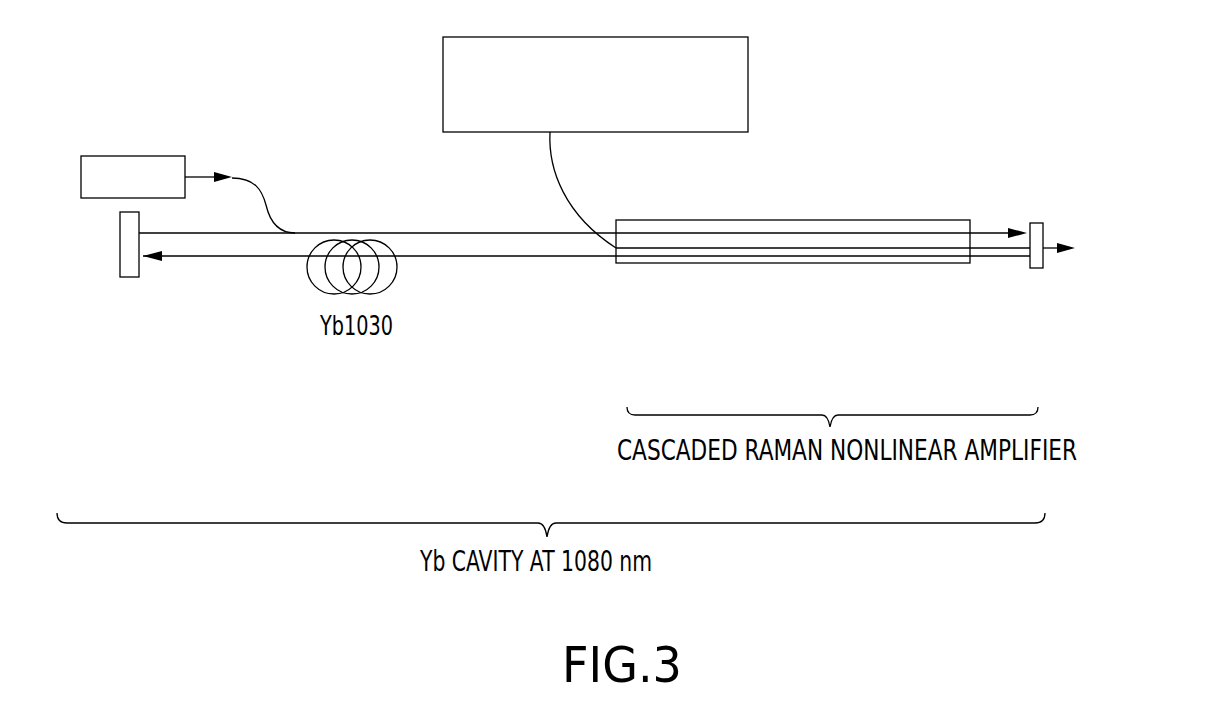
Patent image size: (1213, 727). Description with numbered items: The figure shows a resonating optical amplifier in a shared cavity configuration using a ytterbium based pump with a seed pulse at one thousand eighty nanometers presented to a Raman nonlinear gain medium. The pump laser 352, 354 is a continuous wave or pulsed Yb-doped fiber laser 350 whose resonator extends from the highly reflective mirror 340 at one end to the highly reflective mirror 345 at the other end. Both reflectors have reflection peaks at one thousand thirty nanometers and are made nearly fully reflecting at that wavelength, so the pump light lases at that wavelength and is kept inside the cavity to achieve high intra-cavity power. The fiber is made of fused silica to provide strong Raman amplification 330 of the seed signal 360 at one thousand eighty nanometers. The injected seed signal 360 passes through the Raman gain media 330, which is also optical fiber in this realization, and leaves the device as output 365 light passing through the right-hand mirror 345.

The Raman gain media 330 is at (848, 220).
The highly reflective mirror 340 is at (120, 258).
The highly reflective mirror 345 is at (1037, 222).
The Yb-doped fiber laser 350 is at (170, 157).
The pump laser 352 is at (528, 257).
The pump laser 354 is at (453, 232).
The seed signal 360 is at (575, 203).
The output 365 is at (1128, 232).